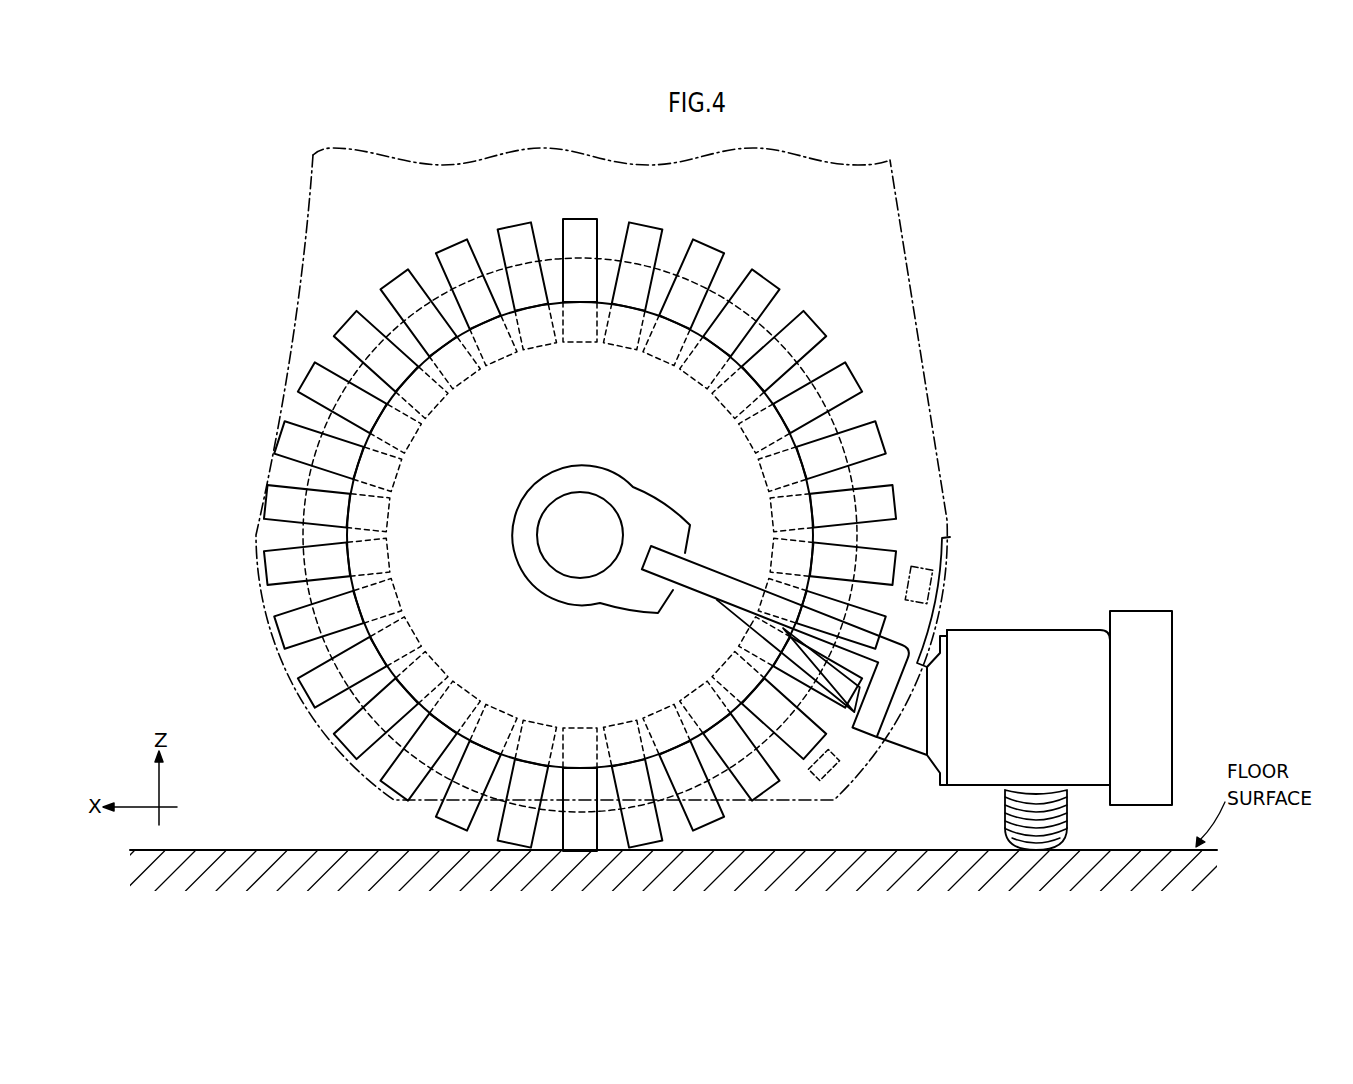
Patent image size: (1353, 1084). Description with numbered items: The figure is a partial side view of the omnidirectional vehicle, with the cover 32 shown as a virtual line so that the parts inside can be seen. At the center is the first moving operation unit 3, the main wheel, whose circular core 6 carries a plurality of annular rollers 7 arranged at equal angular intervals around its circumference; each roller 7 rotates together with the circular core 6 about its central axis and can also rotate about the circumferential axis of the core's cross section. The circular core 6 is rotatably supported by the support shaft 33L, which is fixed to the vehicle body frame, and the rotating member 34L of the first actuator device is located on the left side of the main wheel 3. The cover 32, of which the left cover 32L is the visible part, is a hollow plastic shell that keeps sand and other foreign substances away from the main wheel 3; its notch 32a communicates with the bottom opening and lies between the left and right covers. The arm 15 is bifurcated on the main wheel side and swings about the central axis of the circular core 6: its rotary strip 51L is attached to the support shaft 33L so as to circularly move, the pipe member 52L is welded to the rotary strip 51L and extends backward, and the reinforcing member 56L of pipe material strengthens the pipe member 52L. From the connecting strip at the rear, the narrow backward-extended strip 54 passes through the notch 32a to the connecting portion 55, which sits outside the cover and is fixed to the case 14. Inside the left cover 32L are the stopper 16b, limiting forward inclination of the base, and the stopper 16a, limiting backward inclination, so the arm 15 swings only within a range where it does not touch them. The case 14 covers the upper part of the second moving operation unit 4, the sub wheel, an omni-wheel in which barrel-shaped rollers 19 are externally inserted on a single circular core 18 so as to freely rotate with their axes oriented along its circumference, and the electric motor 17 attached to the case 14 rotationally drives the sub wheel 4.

The first moving operation unit 3 is at (892, 296).
The left cover 32L is at (877, 237).
The cover 32 is at (654, 493).
The notch 32a is at (946, 590).
The rotating member 34L is at (740, 467).
The support shaft 33L is at (567, 518).
The rotary strip 51L is at (645, 513).
The pipe member 52L is at (724, 582).
The reinforcing member 56L is at (755, 632).
The arm 15 is at (684, 609).
The stopper 16a is at (919, 569).
The stopper 16b is at (832, 780).
The connecting portion 55 is at (938, 640).
The backward-extended strip 54 is at (908, 737).
The case 14 is at (1071, 630).
The second moving operation unit 4 is at (1150, 581).
The electric motor 17 is at (1160, 655).
The circular core 18 is at (1050, 800).
The barrel-shaped roller 19 is at (1004, 838).
The annular roller 7 is at (652, 828).
The circular core 6 is at (607, 787).